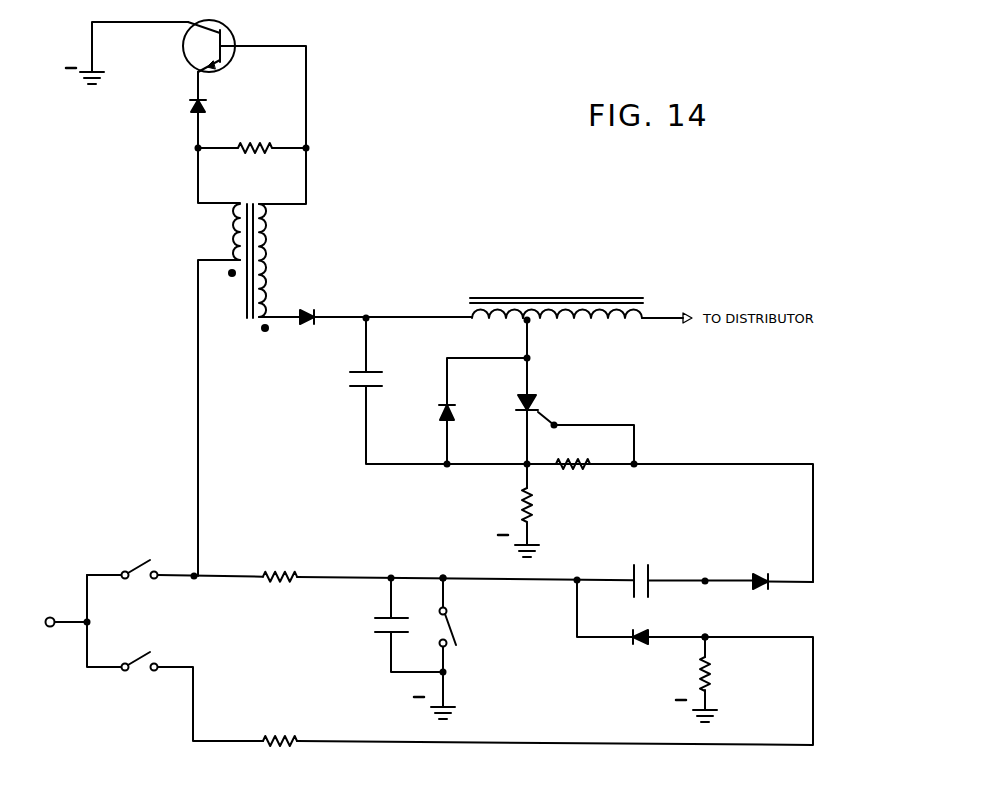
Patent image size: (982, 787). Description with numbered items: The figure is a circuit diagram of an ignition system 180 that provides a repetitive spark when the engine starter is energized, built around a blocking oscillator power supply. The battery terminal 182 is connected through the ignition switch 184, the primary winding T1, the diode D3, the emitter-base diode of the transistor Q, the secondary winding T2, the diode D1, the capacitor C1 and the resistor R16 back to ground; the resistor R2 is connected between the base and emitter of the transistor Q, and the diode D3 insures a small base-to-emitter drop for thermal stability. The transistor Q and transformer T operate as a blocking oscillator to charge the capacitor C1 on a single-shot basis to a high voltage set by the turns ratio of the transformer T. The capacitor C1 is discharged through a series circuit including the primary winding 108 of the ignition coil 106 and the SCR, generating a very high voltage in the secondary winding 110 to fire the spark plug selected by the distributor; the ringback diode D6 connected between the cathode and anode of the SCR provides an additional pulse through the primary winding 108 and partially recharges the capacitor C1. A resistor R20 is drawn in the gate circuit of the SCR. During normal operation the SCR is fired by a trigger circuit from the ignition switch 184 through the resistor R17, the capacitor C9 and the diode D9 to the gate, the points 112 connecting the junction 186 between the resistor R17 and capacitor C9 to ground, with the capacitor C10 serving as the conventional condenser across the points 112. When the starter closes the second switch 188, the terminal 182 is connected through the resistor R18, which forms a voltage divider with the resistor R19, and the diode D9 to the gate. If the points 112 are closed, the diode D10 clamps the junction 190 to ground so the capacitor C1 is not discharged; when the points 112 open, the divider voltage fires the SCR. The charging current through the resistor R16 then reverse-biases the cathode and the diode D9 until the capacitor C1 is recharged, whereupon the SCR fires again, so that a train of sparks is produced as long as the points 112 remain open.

The ignition system 180 is at (414, 185).
The transistor Q is at (222, 26).
The diode D3 is at (192, 106).
The resistor R2 is at (268, 146).
The transformer T is at (250, 268).
The primary winding T1 is at (236, 240).
The secondary winding T2 is at (268, 264).
The diode D1 is at (310, 325).
The ignition coil 106 is at (553, 307).
The primary winding 108 is at (482, 322).
The secondary winding 110 is at (602, 322).
The capacitor C1 is at (349, 374).
The ringback diode D6 is at (456, 413).
The silicon controlled rectifier SCR is at (537, 395).
The resistor R20 is at (560, 468).
The resistor R16 is at (522, 498).
The terminal 182 is at (47, 627).
The ignition switch 184 is at (140, 563).
The second switch 188 is at (126, 660).
The resistor R17 is at (295, 571).
The resistor R18 is at (266, 738).
The capacitor C10 is at (376, 626).
The junction 186 is at (443, 574).
The points 112 is at (456, 624).
The capacitor C9 is at (645, 566).
The diode D9 is at (750, 578).
The diode D10 is at (648, 645).
The junction 190 is at (710, 634).
The resistor R19 is at (712, 670).